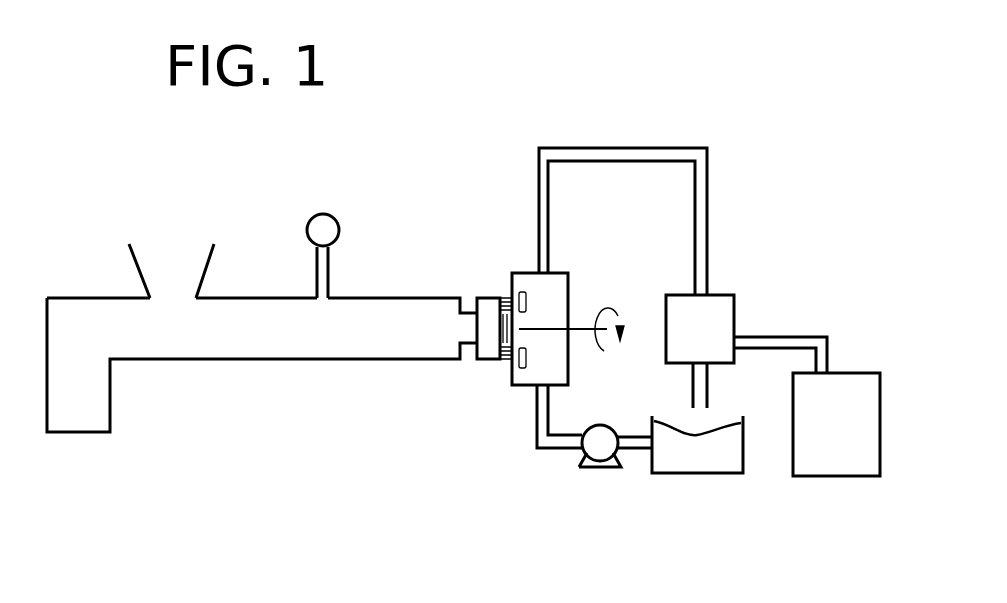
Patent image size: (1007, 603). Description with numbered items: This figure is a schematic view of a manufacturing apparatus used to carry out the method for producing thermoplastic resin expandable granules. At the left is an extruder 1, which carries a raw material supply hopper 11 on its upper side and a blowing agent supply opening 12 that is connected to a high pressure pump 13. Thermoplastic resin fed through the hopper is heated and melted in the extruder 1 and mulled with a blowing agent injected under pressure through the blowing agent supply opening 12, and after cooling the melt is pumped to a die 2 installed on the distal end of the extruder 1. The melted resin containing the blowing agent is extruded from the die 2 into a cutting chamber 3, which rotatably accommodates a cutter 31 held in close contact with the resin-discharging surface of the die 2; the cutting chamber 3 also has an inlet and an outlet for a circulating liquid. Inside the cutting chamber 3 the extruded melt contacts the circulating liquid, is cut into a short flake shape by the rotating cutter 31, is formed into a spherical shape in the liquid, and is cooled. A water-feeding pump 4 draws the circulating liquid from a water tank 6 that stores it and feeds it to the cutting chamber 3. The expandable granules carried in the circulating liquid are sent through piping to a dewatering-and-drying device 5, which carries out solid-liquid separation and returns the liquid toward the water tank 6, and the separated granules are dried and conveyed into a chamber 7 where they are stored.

The extruder 1 is at (68, 303).
The raw material supply hopper 11 is at (170, 252).
The blowing agent supply opening 12 is at (317, 265).
The high pressure pump 13 is at (326, 228).
The die 2 is at (488, 310).
The cutting chamber 3 is at (547, 288).
The cutter 31 is at (547, 329).
The water-feeding pump 4 is at (592, 450).
The dewatering-and-drying device 5 is at (714, 302).
The water tank 6 is at (698, 465).
The chamber 7 is at (866, 387).